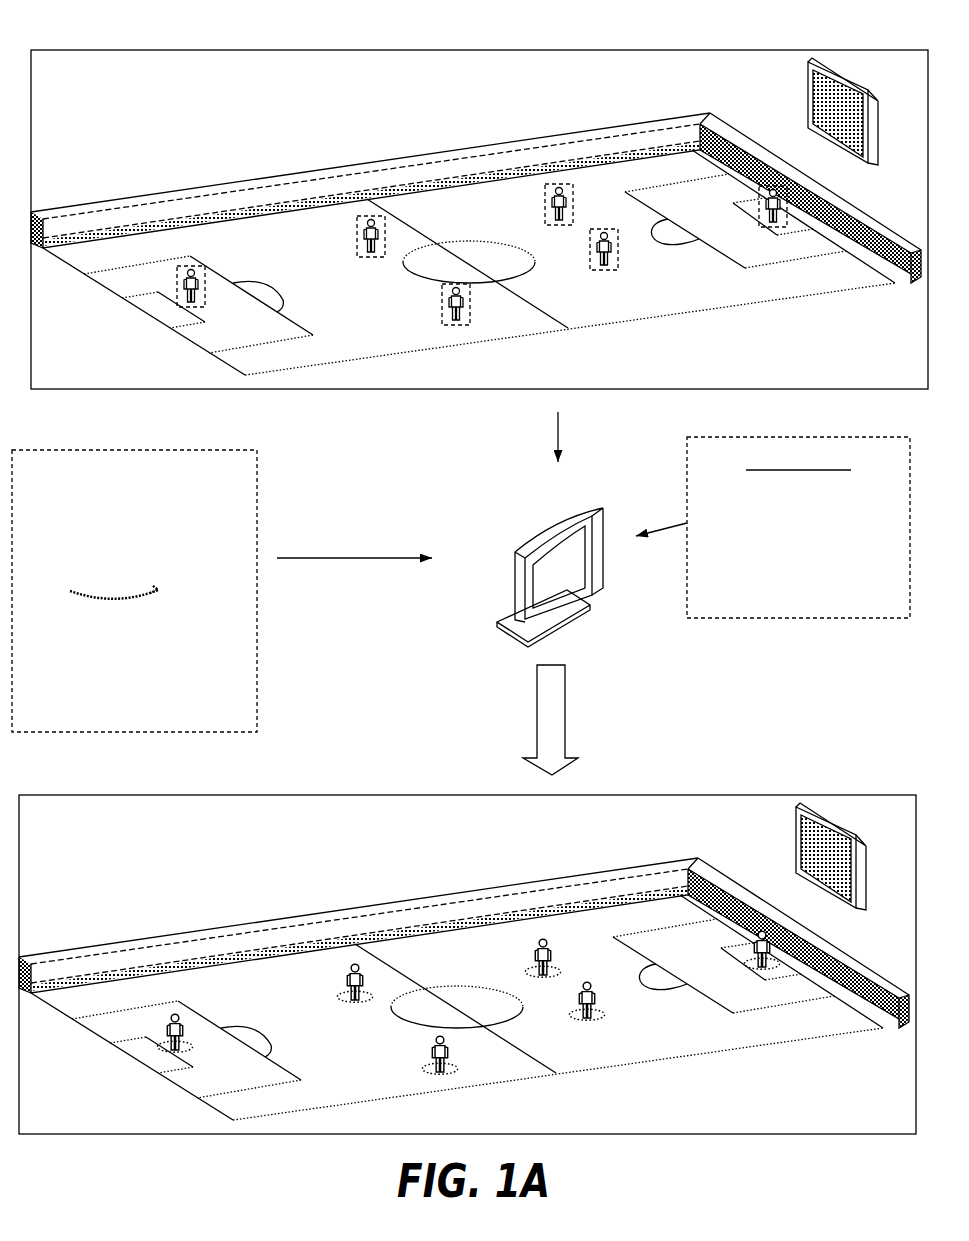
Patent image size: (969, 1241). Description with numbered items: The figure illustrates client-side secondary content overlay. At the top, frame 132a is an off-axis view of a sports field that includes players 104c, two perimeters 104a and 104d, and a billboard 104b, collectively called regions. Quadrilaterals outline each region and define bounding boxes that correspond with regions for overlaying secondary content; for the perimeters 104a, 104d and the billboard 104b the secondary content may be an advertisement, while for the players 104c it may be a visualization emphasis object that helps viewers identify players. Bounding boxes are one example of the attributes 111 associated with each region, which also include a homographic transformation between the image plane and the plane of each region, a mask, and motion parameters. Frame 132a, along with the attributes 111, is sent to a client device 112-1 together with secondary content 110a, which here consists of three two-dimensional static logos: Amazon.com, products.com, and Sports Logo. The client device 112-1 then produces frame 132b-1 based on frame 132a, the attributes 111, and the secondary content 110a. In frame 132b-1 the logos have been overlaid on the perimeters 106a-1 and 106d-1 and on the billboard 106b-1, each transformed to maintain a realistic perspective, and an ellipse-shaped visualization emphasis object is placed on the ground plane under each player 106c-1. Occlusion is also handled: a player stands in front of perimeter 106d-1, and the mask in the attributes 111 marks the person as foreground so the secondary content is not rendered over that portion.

The perimeter 104a is at (442, 160).
The billboard 104b is at (815, 100).
The players 104c is at (636, 266).
The perimeter 104d is at (838, 209).
The frame 132a is at (355, 389).
The secondary content 110a is at (72, 449).
The attributes 111 is at (755, 437).
The client device 112-1 is at (553, 523).
The perimeter 106a-1 is at (339, 926).
The billboard 106b-1 is at (787, 846).
The players 106c-1 is at (634, 1019).
The perimeter 106d-1 is at (843, 951).
The frame 132b-1 is at (242, 1135).